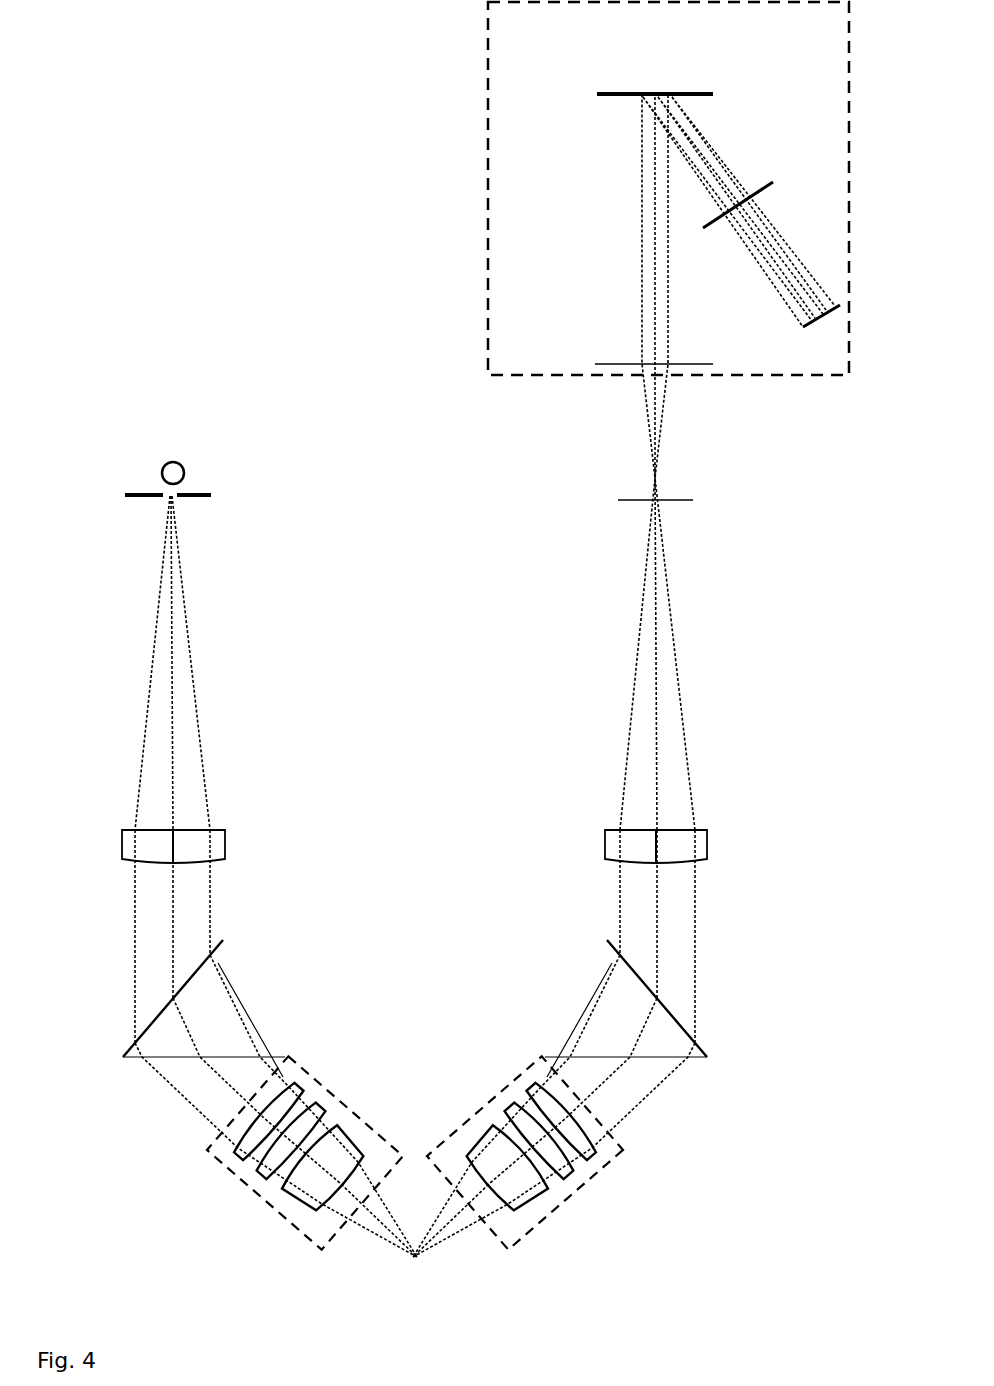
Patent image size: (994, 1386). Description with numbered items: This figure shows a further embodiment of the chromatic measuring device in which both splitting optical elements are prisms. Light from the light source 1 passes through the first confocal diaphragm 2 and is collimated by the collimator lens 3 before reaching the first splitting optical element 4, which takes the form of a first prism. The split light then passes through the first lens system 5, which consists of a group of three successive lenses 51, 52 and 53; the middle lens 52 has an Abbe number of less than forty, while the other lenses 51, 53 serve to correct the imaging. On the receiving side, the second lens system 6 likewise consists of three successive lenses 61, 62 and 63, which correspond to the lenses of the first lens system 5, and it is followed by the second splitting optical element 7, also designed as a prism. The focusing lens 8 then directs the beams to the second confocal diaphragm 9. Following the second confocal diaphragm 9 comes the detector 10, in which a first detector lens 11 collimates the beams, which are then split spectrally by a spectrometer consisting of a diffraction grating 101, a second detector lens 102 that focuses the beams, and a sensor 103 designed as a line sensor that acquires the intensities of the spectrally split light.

The light source 1 is at (177, 461).
The first confocal diaphragm 2 is at (128, 495).
The collimator lens 3 is at (225, 843).
The first splitting optical element 4 is at (130, 1052).
The first lens system 5 is at (324, 1086).
The first lens of first lens system 51 is at (245, 1157).
The second lens of first lens system 52 is at (261, 1178).
The third lens of first lens system 53 is at (291, 1205).
The second lens system 6 is at (504, 1104).
The first lens of second lens system 61 is at (604, 1157).
The second lens of second lens system 62 is at (571, 1177).
The third lens of second lens system 63 is at (534, 1203).
The second splitting optical element 7 is at (705, 1051).
The focusing lens 8 is at (707, 843).
The second confocal diaphragm 9 is at (693, 498).
The detector 10 is at (488, 168).
The spectrometer grating 101 is at (597, 95).
The second detector lens 102 is at (775, 182).
The sensor 103 is at (840, 322).
The first detector lens 11 is at (595, 364).